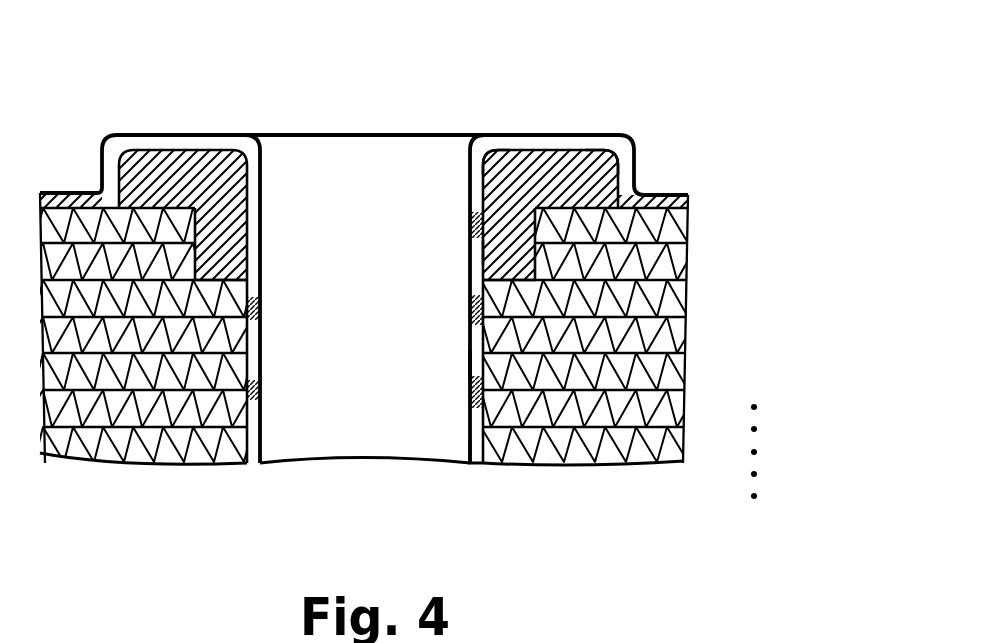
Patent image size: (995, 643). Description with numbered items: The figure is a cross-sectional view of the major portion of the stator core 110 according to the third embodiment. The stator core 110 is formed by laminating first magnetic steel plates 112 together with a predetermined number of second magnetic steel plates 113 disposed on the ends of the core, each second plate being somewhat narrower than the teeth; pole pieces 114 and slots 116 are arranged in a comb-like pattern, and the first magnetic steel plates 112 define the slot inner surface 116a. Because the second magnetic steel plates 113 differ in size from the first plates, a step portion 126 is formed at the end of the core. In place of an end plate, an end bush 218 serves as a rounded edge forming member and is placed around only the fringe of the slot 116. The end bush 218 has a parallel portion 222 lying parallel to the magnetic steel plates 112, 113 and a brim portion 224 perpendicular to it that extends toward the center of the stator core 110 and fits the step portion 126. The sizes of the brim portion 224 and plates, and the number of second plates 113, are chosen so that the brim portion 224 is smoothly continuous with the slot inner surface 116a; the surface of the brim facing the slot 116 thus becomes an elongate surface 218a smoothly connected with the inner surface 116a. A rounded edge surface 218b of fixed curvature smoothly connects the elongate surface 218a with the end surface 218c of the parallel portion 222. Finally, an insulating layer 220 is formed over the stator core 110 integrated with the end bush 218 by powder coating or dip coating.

The stator core 110 is at (805, 188).
The first magnetic steel plates 112 is at (682, 300).
The second magnetic steel plates 113 is at (682, 215).
The pole pieces 114 is at (466, 369).
The slot 116 is at (388, 380).
The slot inner surface 116a is at (468, 449).
The step portion 126 is at (232, 262).
The end bush 218 is at (610, 170).
The elongate surface 218a is at (475, 238).
The rounded edge surface 218b is at (482, 152).
The end surface 218c is at (597, 150).
The insulating layer 220 is at (513, 147).
The parallel portion 222 is at (580, 138).
The brim portion 224 is at (472, 253).